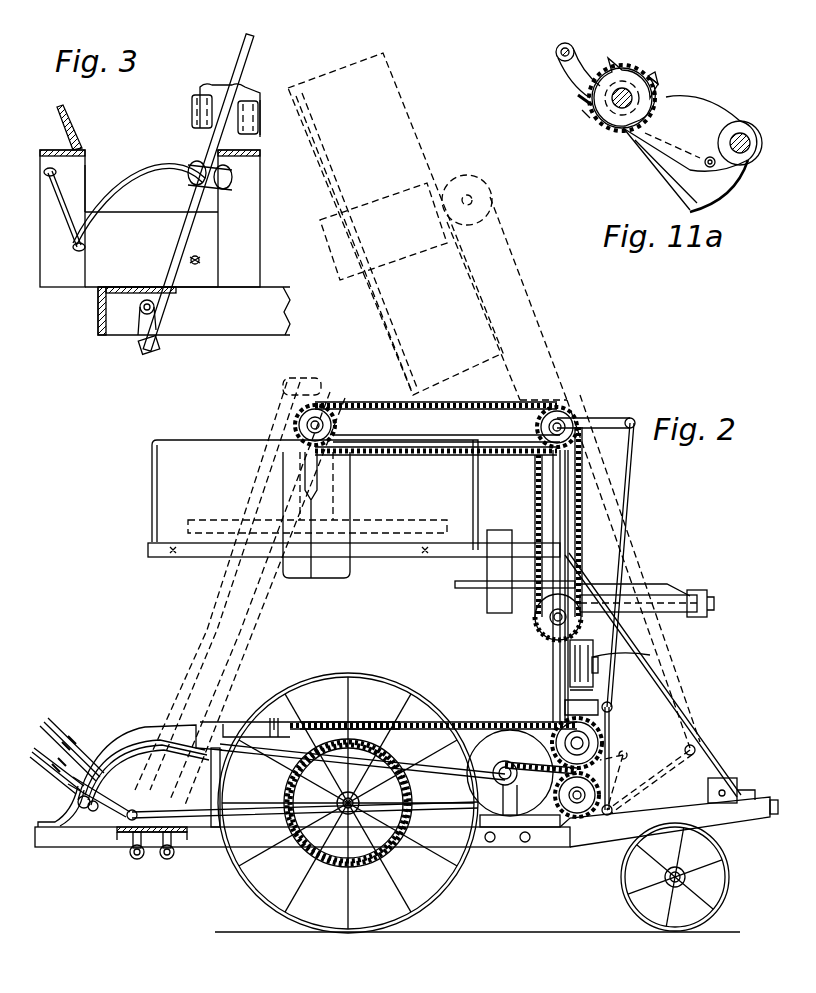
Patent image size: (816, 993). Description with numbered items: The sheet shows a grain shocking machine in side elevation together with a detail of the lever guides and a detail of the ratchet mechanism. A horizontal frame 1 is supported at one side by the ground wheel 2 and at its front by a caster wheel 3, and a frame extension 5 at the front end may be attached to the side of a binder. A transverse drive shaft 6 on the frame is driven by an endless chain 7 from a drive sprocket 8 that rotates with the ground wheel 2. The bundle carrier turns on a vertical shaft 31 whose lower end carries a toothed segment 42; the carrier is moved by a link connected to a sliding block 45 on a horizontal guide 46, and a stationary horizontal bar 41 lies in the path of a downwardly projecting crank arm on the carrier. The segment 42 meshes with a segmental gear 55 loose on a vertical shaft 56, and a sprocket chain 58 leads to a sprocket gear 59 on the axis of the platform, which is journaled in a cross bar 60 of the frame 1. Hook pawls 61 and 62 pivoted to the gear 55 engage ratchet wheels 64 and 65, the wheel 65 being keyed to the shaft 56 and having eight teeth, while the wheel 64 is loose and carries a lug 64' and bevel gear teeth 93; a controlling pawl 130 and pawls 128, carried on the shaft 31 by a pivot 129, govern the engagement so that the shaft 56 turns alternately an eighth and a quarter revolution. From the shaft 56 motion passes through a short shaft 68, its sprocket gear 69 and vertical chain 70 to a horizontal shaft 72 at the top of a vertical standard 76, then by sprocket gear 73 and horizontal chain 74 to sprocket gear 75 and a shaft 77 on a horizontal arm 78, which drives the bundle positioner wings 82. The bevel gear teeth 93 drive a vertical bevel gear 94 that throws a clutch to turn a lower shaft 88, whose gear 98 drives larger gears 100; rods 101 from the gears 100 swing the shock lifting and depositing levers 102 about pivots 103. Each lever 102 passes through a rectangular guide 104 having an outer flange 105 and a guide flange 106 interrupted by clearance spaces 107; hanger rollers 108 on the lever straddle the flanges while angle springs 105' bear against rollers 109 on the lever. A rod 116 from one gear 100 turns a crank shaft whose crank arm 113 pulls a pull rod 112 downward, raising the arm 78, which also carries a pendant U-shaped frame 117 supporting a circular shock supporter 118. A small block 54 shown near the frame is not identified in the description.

In FIG. 2, the horizontal frame 1 is at (248, 836).
In FIG. 2, the ground wheel 2 is at (443, 895).
In FIG. 2, the caster wheel 3 is at (623, 893).
In FIG. 2, the frame extension 5 is at (735, 788).
In FIG. 2, the drive shaft 6 is at (592, 746).
In FIG. 2, the endless chain 7 is at (468, 720).
In FIG. 2, the drive sprocket 8 is at (360, 722).
In FIG. 11A, the shaft 31 is at (752, 150).
In FIG. 2, the stationary horizontal bar 41 is at (468, 589).
In FIG. 11A, the toothed segment 42 is at (708, 118).
In FIG. 2, the sliding block 45 is at (722, 584).
In FIG. 2, the horizontal guide 46 is at (657, 607).
In FIG. 2, the slide block 54 is at (500, 536).
In FIG. 11A, the segmental gear 55 is at (607, 134).
In FIG. 11A, the vertical shaft 56 is at (637, 87).
In FIG. 2, the sprocket chain 58 is at (458, 886).
In FIG. 2, the sprocket gear 59 is at (295, 850).
In FIG. 2, the cross bar 60 is at (305, 862).
In FIG. 11A, the pawl 61 is at (567, 73).
In FIG. 11A, the hook pawl 62 is at (582, 97).
In FIG. 11A, the ratchet wheel 64 is at (622, 72).
In FIG. 11A, the lug 64' is at (565, 138).
In FIG. 11A, the ratchet wheel 65 is at (652, 74).
In FIG. 2, the short horizontal shaft 68 is at (575, 625).
In FIG. 2, the sprocket gear 69 is at (548, 631).
In FIG. 2, the sprocket chain 70 is at (535, 489).
In FIG. 2, the horizontal shaft 72 is at (562, 412).
In FIG. 2, the sprocket gear 73 is at (575, 418).
In FIG. 2, the horizontal sprocket chain 74 is at (457, 402).
In FIG. 2, the sprocket gear 75 is at (325, 400).
In FIG. 2, the vertical standard 76 is at (576, 473).
In FIG. 2, the shaft 77 is at (306, 424).
In FIG. 2, the horizontal arm 78 is at (375, 423).
In FIG. 2, the wings 82 is at (343, 492).
In FIG. 2, the shaft 88 is at (615, 810).
In FIG. 2, the bevel gear teeth 93 is at (556, 694).
In FIG. 2, the vertical bevel gear 94 is at (650, 655).
In FIG. 2, the gear 98 is at (585, 822).
In FIG. 2, the gears 100 is at (503, 714).
In FIG. 3, the rods 101 is at (200, 261).
In FIG. 2, the rods 101 is at (198, 822).
In FIG. 3, the shock lifting and depositing levers 102 is at (185, 237).
In FIG. 2, the shock lifting and depositing levers 102 is at (53, 727).
In FIG. 3, the pivotal connection 103 is at (143, 318).
In FIG. 2, the pivotal connection 103 is at (130, 852).
In FIG. 3, the rectangular guides 104 is at (87, 165).
In FIG. 2, the rectangular guides 104 is at (137, 730).
In FIG. 3, the outer longitudinal flange 105 is at (81, 121).
In FIG. 3, the angle shaped spring 105' is at (139, 203).
In FIG. 3, the guide flange 106 is at (248, 93).
In FIG. 2, the clearance spaces 107 is at (93, 757).
In FIG. 3, the rollers 108 is at (194, 105).
In FIG. 2, the rollers 108 is at (74, 795).
In FIG. 3, the rollers 109 is at (187, 172).
In FIG. 2, the rollers 109 is at (85, 808).
In FIG. 2, the pull rod 112 is at (624, 492).
In FIG. 2, the crank arm 113 is at (612, 721).
In FIG. 2, the rod 116 is at (535, 776).
In FIG. 2, the pendant U-shaped frame 117 is at (153, 483).
In FIG. 2, the shock supporter 118 is at (200, 556).
In FIG. 11A, the pawls 128 is at (648, 155).
In FIG. 11A, the pivot 129 is at (714, 178).
In FIG. 11A, the controlling pawl 130 is at (657, 144).